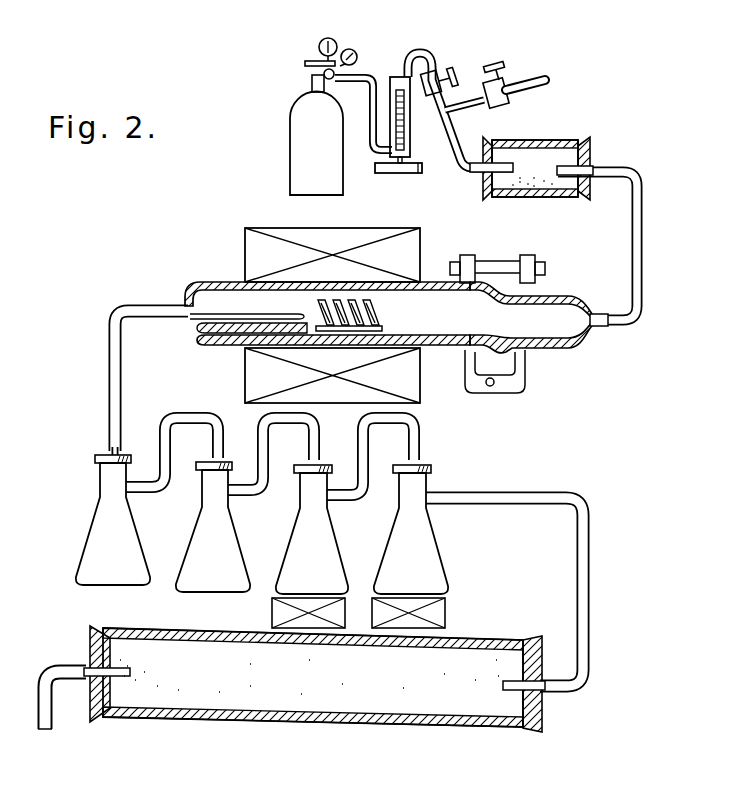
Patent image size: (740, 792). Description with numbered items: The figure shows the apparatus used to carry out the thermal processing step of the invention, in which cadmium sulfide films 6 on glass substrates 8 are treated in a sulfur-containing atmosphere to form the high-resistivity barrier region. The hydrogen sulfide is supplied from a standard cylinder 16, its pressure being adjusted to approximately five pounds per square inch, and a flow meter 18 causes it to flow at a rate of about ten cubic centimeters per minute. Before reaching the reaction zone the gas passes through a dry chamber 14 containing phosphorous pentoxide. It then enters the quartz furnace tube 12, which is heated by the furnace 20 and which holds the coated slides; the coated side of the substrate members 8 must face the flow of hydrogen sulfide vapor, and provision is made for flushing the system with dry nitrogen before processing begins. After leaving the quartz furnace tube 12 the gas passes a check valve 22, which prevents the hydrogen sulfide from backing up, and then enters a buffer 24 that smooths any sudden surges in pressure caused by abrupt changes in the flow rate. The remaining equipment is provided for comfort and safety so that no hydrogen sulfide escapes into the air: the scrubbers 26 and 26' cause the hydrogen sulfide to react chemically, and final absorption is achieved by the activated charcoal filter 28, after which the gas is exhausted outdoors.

The cadmium sulfide films 6 is at (372, 320).
The glass substrates 8 is at (318, 310).
The quartz furnace tube 12 is at (221, 282).
The dry chamber 14 is at (571, 141).
The cylinder 16 is at (300, 117).
The flow meter 18 is at (392, 77).
The furnace 20 is at (420, 253).
The check valve 22 is at (98, 537).
The buffer 24 is at (193, 542).
The scrubber 26 is at (304, 546).
The scrubber 26' is at (419, 546).
The activated charcoal filter 28 is at (430, 716).